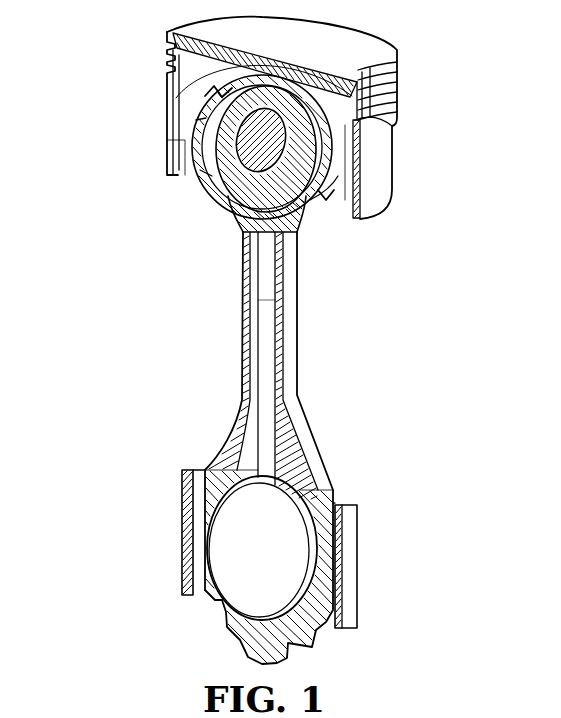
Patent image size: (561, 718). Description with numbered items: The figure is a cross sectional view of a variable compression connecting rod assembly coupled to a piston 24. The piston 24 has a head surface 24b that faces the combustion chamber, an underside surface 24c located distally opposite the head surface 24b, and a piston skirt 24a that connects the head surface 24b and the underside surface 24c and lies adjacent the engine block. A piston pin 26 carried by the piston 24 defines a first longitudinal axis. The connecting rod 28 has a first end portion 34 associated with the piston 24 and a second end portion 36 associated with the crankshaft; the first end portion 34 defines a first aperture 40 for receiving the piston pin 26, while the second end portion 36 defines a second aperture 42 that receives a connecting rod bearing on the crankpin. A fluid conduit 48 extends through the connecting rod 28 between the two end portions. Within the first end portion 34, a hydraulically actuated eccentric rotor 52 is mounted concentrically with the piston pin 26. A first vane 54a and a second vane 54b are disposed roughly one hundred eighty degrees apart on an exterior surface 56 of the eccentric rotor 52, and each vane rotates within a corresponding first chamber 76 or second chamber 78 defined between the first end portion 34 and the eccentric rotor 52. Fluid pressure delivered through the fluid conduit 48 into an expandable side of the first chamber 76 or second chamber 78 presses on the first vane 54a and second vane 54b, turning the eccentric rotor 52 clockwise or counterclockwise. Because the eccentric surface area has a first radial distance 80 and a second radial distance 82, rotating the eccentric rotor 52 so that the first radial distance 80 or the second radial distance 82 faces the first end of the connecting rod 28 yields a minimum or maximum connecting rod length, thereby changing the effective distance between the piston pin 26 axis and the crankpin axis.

The piston 24 is at (157, 48).
The piston skirt 24a is at (385, 190).
The head surface 24b is at (353, 43).
The underside surface 24c is at (187, 156).
The piston pin 26 is at (385, 128).
The connecting rod 28 is at (300, 395).
The first end portion 34 is at (338, 183).
The second end portion 36 is at (332, 522).
The first aperture 40 is at (200, 147).
The second aperture 42 is at (297, 555).
The fluid conduit 48 is at (283, 345).
The hydraulically actuated eccentric rotor 52 is at (237, 220).
The first vane 54a is at (215, 88).
The second vane 54b is at (350, 203).
The exterior surface 56 is at (355, 157).
The first chamber 76 is at (207, 172).
The second chamber 78 is at (375, 73).
The first radial distance 80 is at (187, 129).
The second radial distance 82 is at (213, 196).